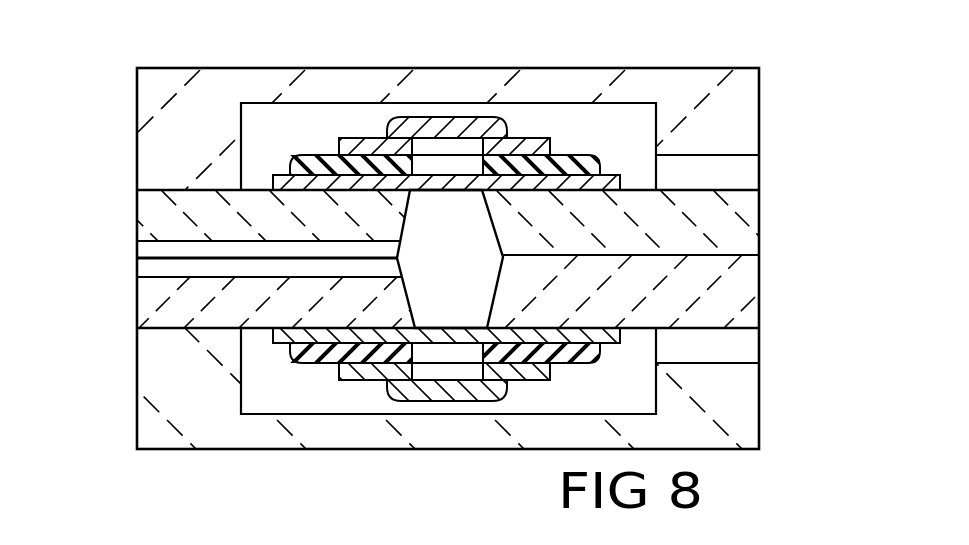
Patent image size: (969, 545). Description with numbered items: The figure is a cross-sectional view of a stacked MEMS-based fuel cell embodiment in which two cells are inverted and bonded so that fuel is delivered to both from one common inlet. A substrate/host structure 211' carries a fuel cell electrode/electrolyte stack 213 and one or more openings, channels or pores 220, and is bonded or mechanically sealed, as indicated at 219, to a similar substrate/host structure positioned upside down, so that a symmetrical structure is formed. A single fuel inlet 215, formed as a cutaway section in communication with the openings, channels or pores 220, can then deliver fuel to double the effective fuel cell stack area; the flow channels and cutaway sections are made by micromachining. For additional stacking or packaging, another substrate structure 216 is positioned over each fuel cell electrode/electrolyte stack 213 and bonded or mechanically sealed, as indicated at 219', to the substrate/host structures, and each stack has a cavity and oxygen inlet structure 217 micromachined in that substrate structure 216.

The fuel cell electrode/electrolyte stack 213 is at (540, 57).
The substrate structure 216 is at (760, 95).
The cavity and oxygen inlet structure 217 is at (760, 167).
The bond or mechanical seal 219 is at (628, 272).
The bond or mechanical seal 219' is at (400, 257).
The substrate/host structure 211' is at (366, 272).
The fuel inlet 215 is at (141, 257).
The openings, channels or pores 220 is at (475, 270).